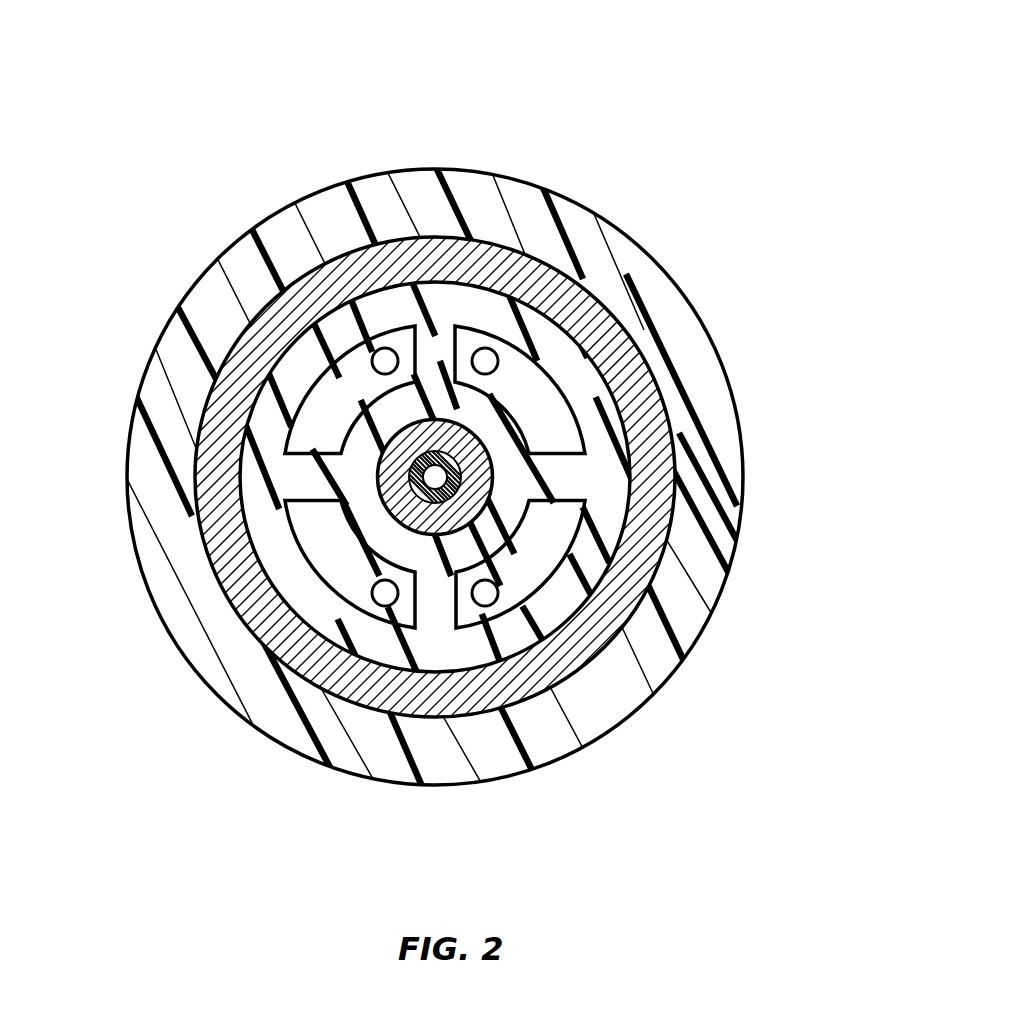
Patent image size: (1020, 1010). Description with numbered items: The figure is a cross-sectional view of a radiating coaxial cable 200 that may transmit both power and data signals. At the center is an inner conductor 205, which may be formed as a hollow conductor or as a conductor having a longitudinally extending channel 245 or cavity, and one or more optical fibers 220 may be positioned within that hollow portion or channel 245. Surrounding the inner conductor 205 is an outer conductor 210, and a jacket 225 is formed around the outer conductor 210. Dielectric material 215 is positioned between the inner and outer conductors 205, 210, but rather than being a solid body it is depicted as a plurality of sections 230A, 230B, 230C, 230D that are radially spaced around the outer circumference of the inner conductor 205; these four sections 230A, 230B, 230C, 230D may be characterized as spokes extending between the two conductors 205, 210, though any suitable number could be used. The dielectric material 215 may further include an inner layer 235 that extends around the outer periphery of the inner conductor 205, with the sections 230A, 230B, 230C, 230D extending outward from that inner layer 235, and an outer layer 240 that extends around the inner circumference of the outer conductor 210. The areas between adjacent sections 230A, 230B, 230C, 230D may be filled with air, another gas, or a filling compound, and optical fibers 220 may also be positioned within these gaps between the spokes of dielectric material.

The coaxial cable 200 is at (197, 80).
The inner conductor 205 is at (472, 447).
The outer conductor 210 is at (600, 349).
The dielectric material 215 is at (434, 349).
The optical fibers 220 is at (510, 601).
The jacket 225 is at (698, 557).
The section 230A is at (607, 331).
The section 230B is at (586, 486).
The section 230C is at (443, 603).
The section 230D is at (280, 469).
The inner layer 235 is at (467, 442).
The outer layer 240 is at (352, 290).
The channel 245 is at (472, 480).